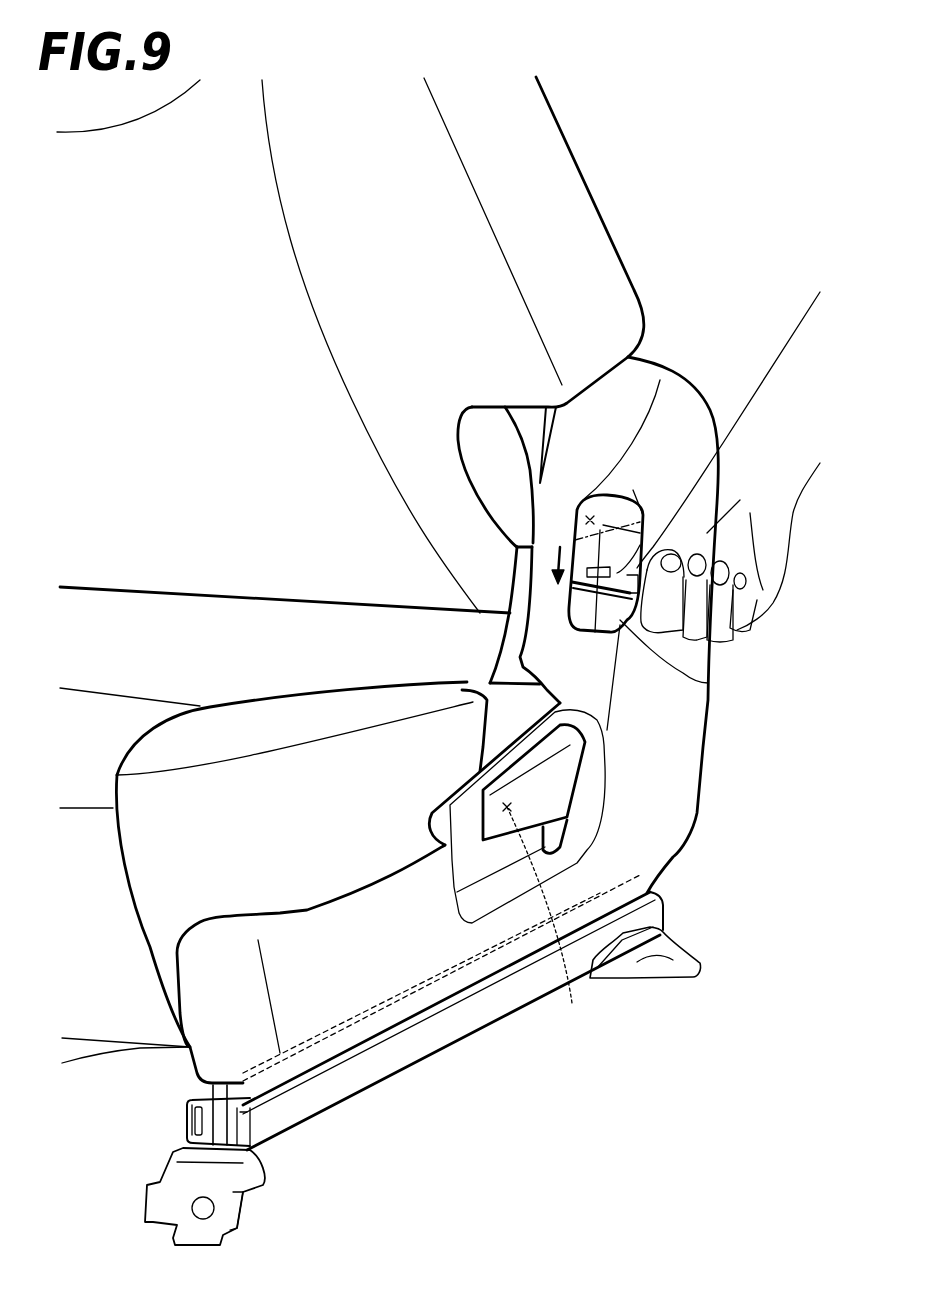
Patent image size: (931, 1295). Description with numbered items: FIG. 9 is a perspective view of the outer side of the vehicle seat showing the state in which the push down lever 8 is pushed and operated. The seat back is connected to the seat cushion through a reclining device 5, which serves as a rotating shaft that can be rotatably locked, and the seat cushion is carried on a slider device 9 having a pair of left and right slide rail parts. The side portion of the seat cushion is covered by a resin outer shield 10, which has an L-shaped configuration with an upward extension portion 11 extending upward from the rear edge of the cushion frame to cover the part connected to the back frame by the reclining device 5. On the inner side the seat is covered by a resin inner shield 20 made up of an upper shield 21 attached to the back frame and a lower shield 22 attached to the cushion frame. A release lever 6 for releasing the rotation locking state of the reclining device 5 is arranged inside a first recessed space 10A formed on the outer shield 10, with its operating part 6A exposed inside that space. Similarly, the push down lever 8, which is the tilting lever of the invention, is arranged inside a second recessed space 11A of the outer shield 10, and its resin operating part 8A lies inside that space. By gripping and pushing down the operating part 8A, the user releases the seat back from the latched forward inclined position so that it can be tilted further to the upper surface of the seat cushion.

The reclining device 5 is at (560, 430).
The release lever 6 is at (575, 730).
The operating part 6A is at (557, 778).
The push down lever 8 is at (713, 688).
The operating part 8A is at (580, 608).
The slider device 9 is at (290, 1112).
The outer shield 10 is at (690, 657).
The first recessed space 10A is at (549, 919).
The upward extension portion 11 is at (697, 447).
The second recessed space 11A is at (633, 490).
The inner shield 20 is at (422, 555).
The upper shield 21 is at (513, 440).
The lower shield 22 is at (523, 587).